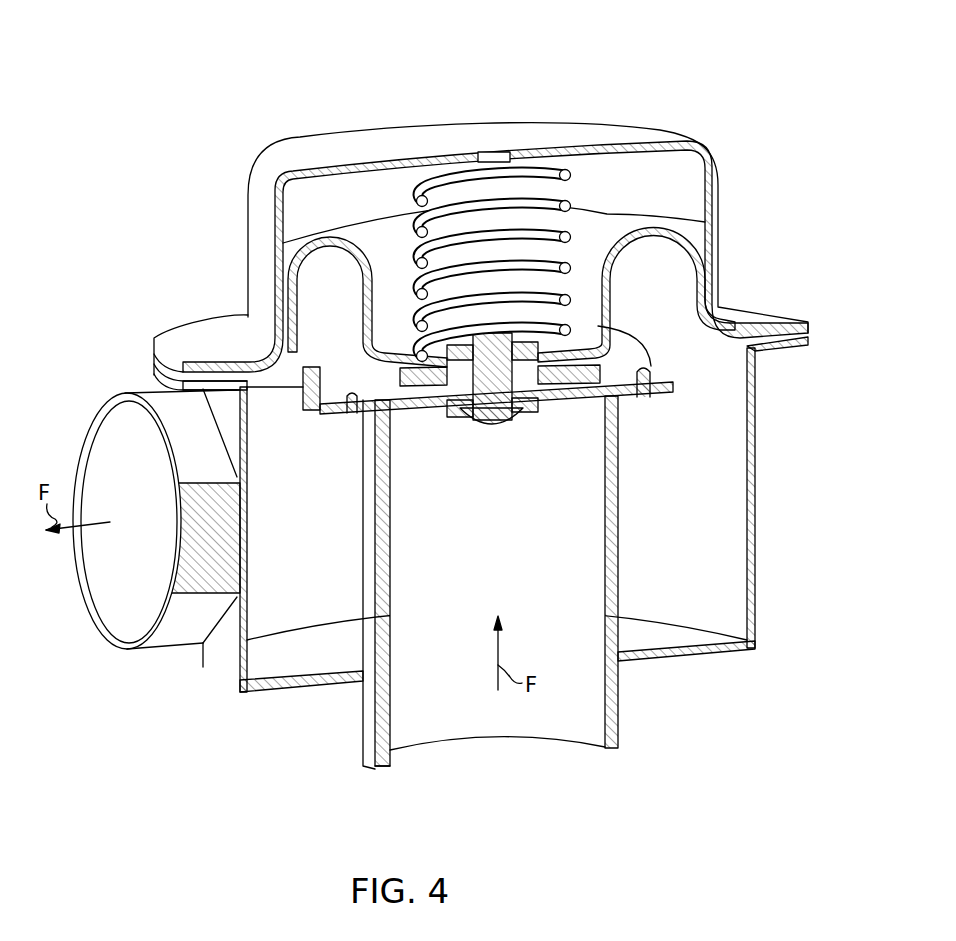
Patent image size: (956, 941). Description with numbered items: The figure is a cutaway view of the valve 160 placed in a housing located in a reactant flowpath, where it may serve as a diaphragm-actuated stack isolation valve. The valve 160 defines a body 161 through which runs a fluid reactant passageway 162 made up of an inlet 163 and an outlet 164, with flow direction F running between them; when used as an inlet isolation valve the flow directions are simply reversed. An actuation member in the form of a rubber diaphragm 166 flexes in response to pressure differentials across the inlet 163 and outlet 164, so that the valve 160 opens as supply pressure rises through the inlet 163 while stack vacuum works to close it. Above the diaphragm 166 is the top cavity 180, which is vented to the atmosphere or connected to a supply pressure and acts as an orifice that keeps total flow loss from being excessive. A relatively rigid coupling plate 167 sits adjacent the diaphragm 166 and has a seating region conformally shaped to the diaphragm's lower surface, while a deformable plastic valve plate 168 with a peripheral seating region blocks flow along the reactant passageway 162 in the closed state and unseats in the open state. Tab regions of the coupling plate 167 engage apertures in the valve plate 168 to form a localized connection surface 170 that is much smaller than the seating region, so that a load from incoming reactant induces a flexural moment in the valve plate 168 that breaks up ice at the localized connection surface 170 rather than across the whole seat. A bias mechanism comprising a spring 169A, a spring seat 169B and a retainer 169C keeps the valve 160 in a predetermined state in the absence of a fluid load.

The valve 160 is at (166, 96).
The body 161 is at (222, 670).
The fluid reactant passageway 162 is at (515, 520).
The inlet 163 is at (440, 735).
The outlet 164 is at (108, 590).
The diaphragm 166 is at (772, 345).
The coupling plate 167 is at (655, 398).
The valve plate 168 is at (668, 385).
The spring 169A is at (540, 170).
The spring seat 169B is at (442, 366).
The retainer 169C is at (528, 357).
The localized connection surface 170 is at (650, 353).
The top cavity 180 is at (490, 150).